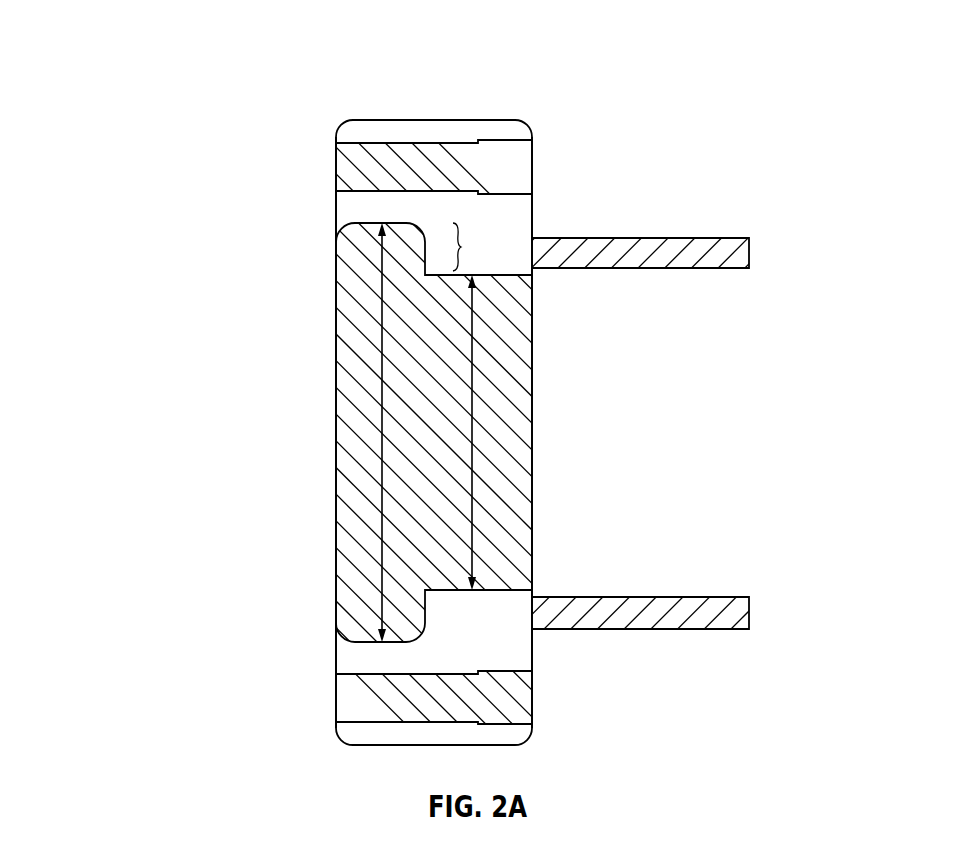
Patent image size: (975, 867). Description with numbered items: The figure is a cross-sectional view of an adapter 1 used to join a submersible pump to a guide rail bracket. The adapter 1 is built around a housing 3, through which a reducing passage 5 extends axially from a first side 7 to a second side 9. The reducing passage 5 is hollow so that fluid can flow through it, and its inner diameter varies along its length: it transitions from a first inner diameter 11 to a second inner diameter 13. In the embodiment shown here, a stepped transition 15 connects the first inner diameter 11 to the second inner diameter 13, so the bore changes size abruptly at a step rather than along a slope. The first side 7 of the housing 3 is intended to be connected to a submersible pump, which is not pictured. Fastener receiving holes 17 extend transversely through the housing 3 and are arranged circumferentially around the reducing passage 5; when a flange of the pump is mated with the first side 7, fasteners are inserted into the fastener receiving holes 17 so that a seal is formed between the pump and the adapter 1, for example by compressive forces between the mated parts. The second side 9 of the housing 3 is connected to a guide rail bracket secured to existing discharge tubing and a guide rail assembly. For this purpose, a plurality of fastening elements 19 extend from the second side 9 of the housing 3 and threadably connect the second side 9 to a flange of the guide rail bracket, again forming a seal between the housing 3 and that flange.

The adapter 1 is at (180, 43).
The housing 3 is at (375, 118).
The reducing passage 5 is at (353, 313).
The first side 7 is at (337, 438).
The second side 9 is at (532, 490).
The first inner diameter 11 is at (380, 580).
The second inner diameter 13 is at (473, 458).
The stepped transition 15 is at (461, 247).
The fastener receiving hole 17 is at (353, 695).
The fastening element 19 is at (620, 269).